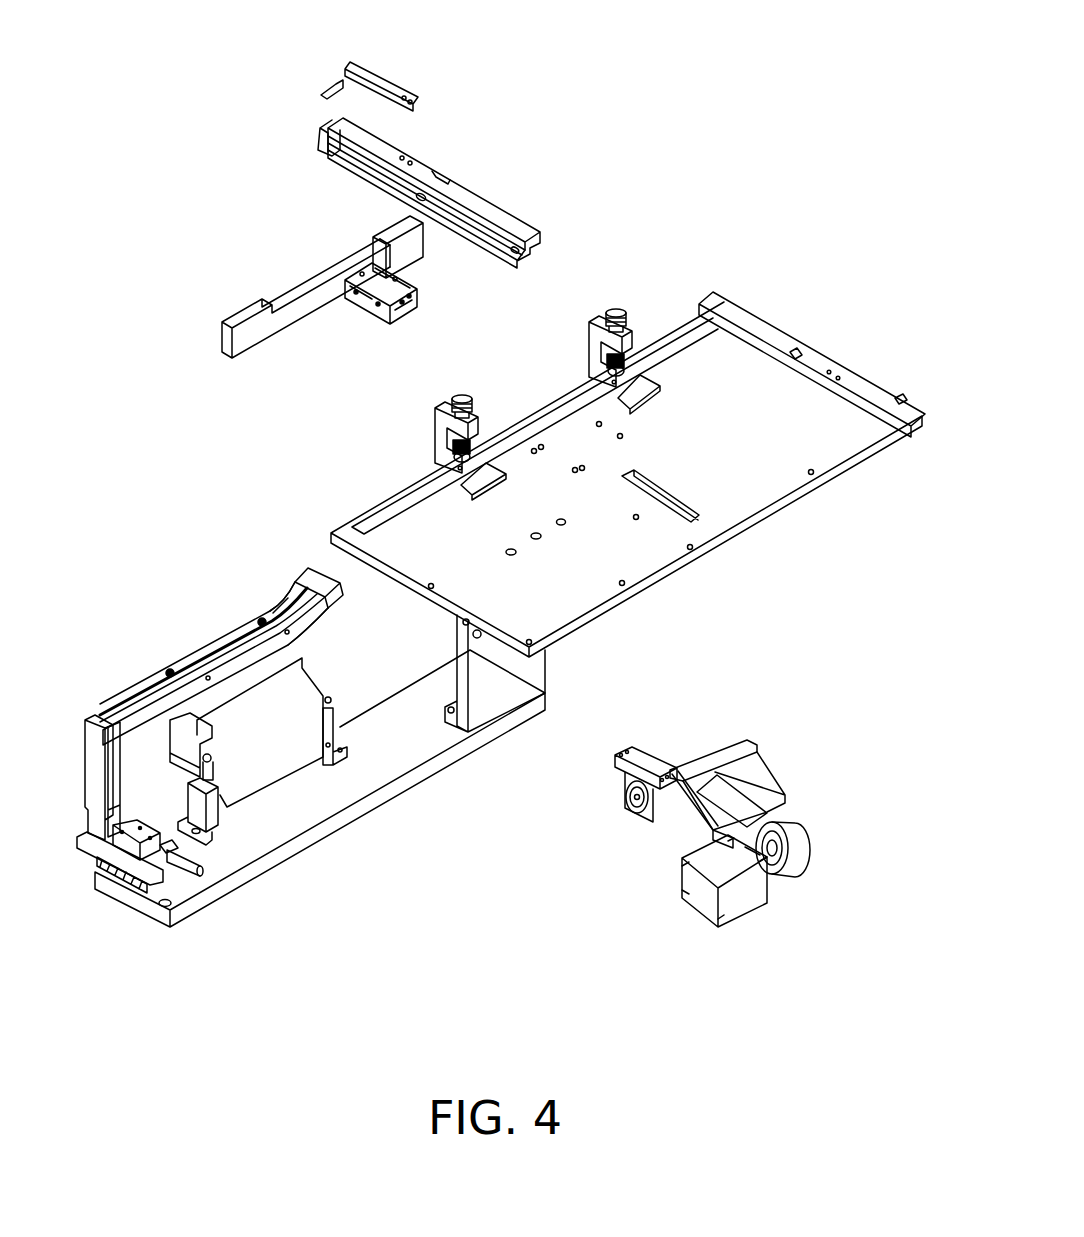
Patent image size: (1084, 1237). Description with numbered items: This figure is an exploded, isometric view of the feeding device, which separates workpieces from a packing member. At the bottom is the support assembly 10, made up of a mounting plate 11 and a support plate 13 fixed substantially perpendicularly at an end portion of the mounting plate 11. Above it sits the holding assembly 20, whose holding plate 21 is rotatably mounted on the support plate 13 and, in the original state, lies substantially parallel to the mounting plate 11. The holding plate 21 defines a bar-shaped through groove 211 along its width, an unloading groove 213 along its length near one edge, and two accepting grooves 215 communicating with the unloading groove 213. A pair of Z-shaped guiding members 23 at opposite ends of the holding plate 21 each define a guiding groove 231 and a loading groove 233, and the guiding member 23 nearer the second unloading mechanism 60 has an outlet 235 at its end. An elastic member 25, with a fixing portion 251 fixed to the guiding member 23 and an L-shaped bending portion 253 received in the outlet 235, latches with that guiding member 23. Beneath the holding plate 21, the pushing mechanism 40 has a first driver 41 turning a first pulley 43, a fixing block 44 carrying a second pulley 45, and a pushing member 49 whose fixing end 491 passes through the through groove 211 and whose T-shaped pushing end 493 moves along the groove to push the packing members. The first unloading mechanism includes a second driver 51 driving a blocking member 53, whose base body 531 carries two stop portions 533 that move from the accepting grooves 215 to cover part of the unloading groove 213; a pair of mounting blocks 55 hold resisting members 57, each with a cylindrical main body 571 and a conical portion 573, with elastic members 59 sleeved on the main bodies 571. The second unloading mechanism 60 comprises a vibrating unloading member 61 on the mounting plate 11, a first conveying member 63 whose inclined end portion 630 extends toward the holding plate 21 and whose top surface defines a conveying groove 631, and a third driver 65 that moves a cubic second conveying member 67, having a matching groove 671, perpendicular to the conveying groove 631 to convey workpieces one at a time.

The support assembly 10 is at (562, 801).
The mounting plate 11 is at (430, 774).
The support plate 13 is at (500, 697).
The holding assembly 20 is at (703, 100).
The holding plate 21 is at (690, 375).
The through groove 211 is at (677, 496).
The unloading groove 213 is at (373, 518).
The accepting grooves 215 is at (455, 486).
The guiding members 23 is at (502, 218).
The guiding groove 231 is at (895, 398).
The loading groove 233 is at (796, 357).
The outlet 235 is at (334, 151).
The elastic member 25 is at (418, 79).
The fixing portion 251 is at (366, 60).
The bending portion 253 is at (336, 88).
The pushing mechanism 40 is at (790, 767).
The first driver 41 is at (737, 902).
The first pulley 43 is at (800, 845).
The fixing block 44 is at (645, 757).
The second pulley 45 is at (679, 766).
The pushing member 49 is at (660, 965).
The fixing end 491 is at (730, 783).
The pushing end 493 is at (693, 798).
The second driver 51 is at (372, 264).
The blocking member 53 is at (243, 318).
The base body 531 is at (302, 311).
The stop portions 533 is at (395, 226).
The mounting blocks 55 is at (440, 412).
The resisting members 57 is at (437, 331).
The main body 571 is at (461, 396).
The conical portion 573 is at (486, 440).
The elastic members 59 is at (455, 448).
The second unloading mechanism 60 is at (67, 620).
The unloading member 61 is at (283, 695).
The first conveying member 63 is at (210, 665).
The end portion 630 is at (338, 600).
The conveying groove 631 is at (310, 611).
The third driver 65 is at (140, 824).
The second conveying member 67 is at (95, 733).
The matching groove 671 is at (111, 728).